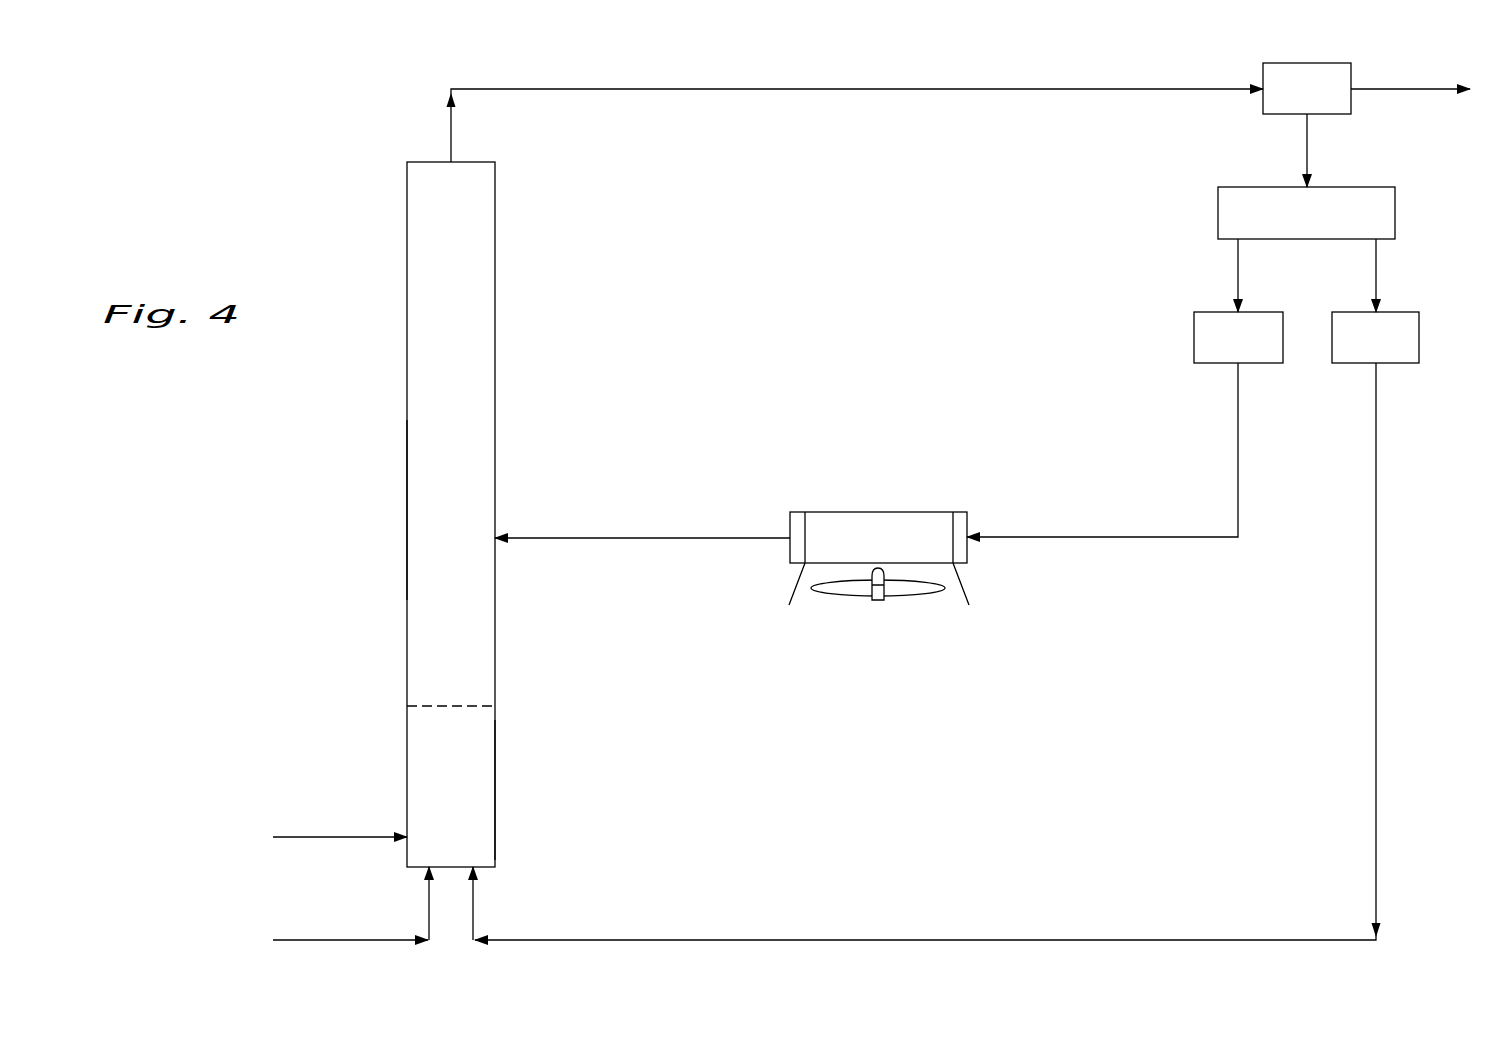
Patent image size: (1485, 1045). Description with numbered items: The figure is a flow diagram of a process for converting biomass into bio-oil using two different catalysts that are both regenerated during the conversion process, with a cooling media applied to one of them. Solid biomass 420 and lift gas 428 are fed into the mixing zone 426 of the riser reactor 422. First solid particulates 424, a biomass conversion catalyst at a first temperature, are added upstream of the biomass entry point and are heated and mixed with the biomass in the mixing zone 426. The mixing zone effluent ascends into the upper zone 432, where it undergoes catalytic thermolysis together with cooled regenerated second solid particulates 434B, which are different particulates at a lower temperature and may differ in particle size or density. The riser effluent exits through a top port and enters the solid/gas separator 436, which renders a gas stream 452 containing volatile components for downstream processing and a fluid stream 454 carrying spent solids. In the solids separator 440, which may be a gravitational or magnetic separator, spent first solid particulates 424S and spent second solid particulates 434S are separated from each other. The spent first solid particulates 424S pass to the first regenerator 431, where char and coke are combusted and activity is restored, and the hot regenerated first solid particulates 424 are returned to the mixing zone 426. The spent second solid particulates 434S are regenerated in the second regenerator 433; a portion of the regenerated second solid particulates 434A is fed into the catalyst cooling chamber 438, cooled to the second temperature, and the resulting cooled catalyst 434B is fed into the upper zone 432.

The solid biomass 420 is at (315, 835).
The riser reactor 422 is at (470, 378).
The first solid particulates 424 is at (1377, 492).
The spent first solid particulates 424S is at (1378, 274).
The mixing zone 426 is at (485, 783).
The lift gas 428 is at (315, 938).
The first regenerator 431 is at (1396, 360).
The upper zone 432 is at (420, 512).
The second regenerator 433 is at (1259, 360).
The regenerated second solid particulates 434A is at (1127, 535).
The cooled regenerated second solid particulates 434B is at (595, 535).
The spent second solid particulates 434S is at (1236, 275).
The solid/gas separator 436 is at (1328, 112).
The catalyst cooling chamber 438 is at (899, 552).
The solids separator 440 is at (1328, 236).
The gas stream 452 is at (1408, 86).
The fluid stream 454 is at (1308, 138).